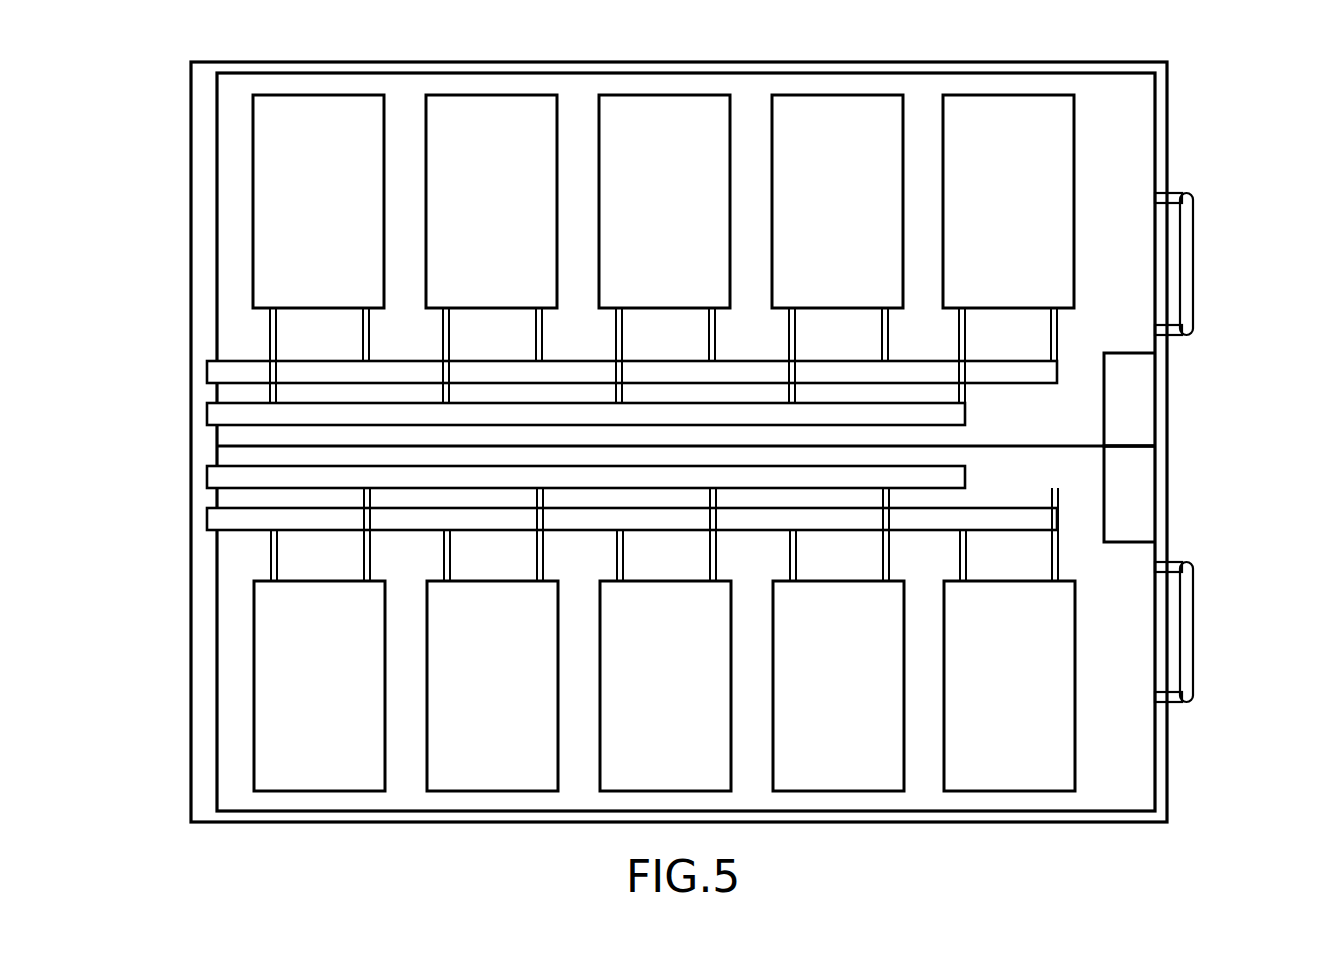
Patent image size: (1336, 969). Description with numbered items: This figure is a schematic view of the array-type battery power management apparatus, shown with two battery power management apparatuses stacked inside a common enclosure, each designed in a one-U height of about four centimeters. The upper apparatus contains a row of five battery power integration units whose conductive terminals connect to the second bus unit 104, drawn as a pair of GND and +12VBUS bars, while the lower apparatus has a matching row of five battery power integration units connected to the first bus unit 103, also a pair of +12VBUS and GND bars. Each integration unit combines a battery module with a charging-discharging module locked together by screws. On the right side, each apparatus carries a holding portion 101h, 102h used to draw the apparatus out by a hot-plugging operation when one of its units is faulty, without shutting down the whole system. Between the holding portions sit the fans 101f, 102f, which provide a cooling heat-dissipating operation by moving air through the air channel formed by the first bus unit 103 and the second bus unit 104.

The fan 101f is at (1140, 494).
The fan 102f is at (1140, 401).
The holding portion 101h is at (1187, 631).
The holding portion 102h is at (1187, 263).
The bus unit 103 is at (207, 476).
The bus unit 104 is at (207, 371).